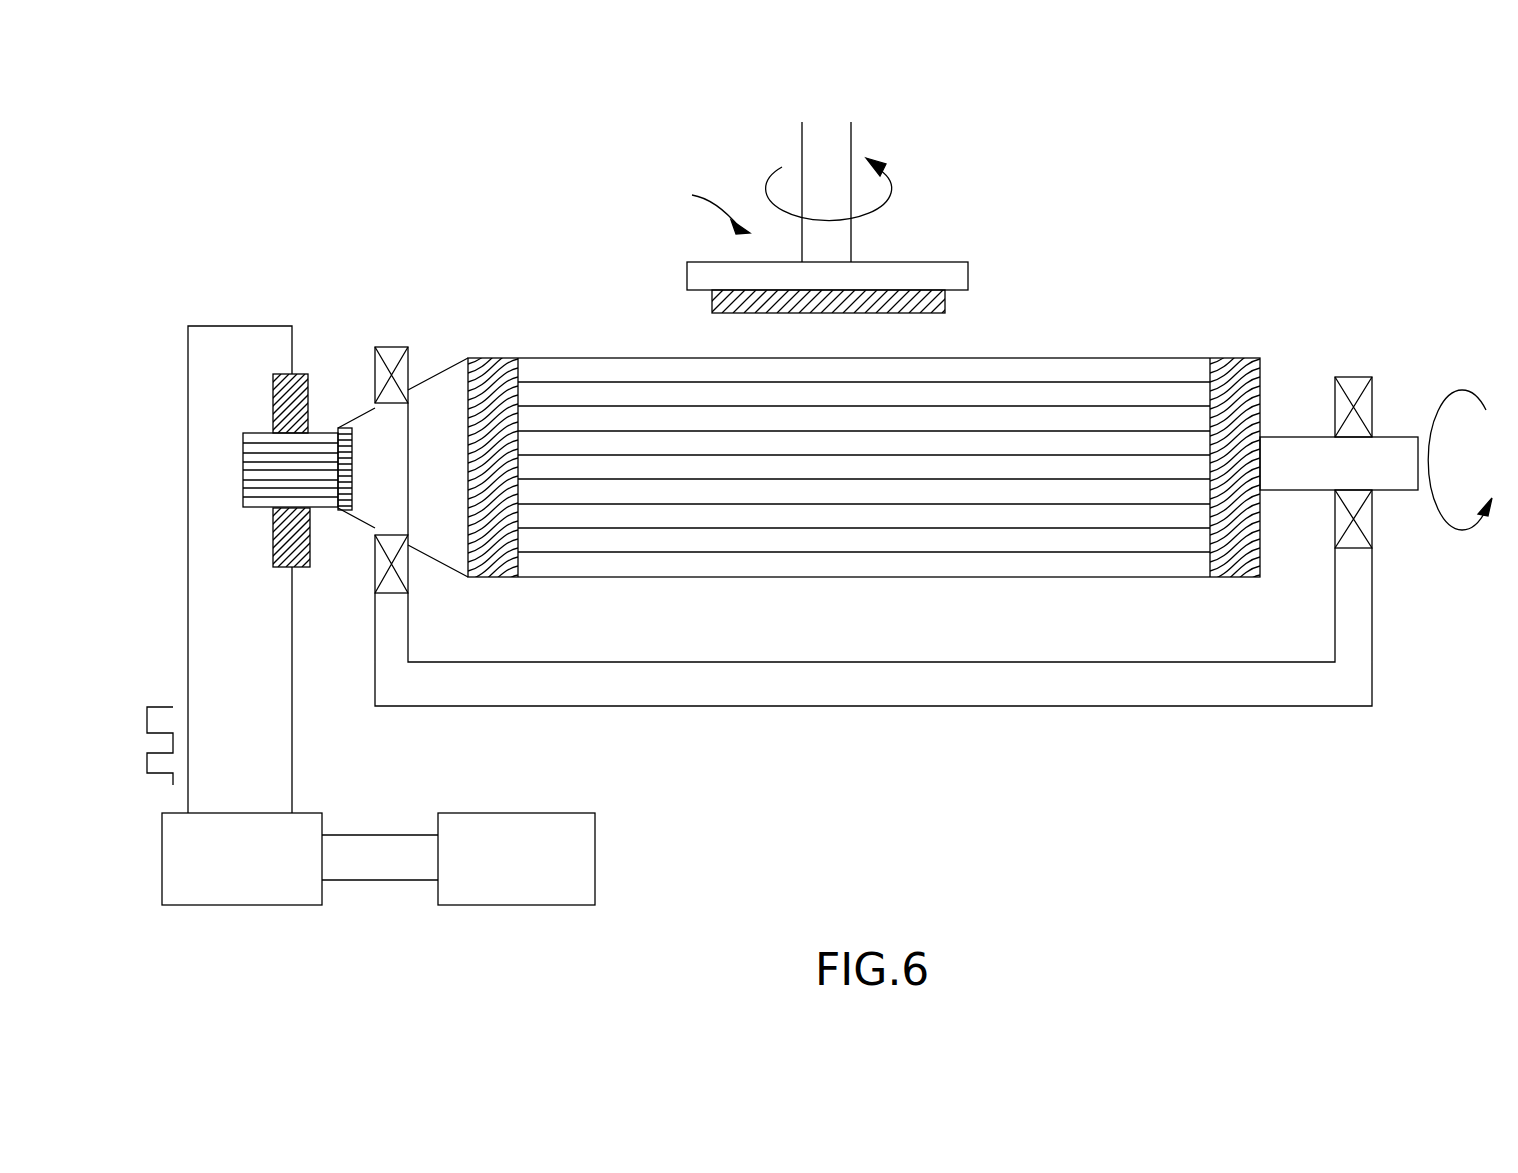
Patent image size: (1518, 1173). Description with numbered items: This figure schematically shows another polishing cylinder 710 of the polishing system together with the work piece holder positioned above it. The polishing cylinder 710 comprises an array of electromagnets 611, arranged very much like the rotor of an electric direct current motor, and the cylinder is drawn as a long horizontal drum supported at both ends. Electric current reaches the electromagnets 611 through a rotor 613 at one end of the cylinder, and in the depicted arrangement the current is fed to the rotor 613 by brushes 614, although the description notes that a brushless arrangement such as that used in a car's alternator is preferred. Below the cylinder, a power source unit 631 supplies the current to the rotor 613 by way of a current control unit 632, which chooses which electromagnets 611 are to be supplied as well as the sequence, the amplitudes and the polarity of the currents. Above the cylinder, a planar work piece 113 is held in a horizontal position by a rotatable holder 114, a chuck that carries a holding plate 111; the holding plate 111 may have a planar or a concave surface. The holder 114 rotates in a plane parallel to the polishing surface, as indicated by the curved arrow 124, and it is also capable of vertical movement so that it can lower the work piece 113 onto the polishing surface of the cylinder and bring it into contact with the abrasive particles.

The electromagnets 611 is at (1152, 357).
The polishing cylinder 710 is at (448, 398).
The rotor 613 is at (320, 447).
The brushes 614 is at (285, 535).
The current control unit 632 is at (300, 859).
The power source unit 631 is at (516, 859).
The holding plate 111 is at (968, 275).
The planar work piece 113 is at (945, 300).
The arrow 124 is at (852, 185).
The rotatable holder (chuck) 114 is at (706, 198).